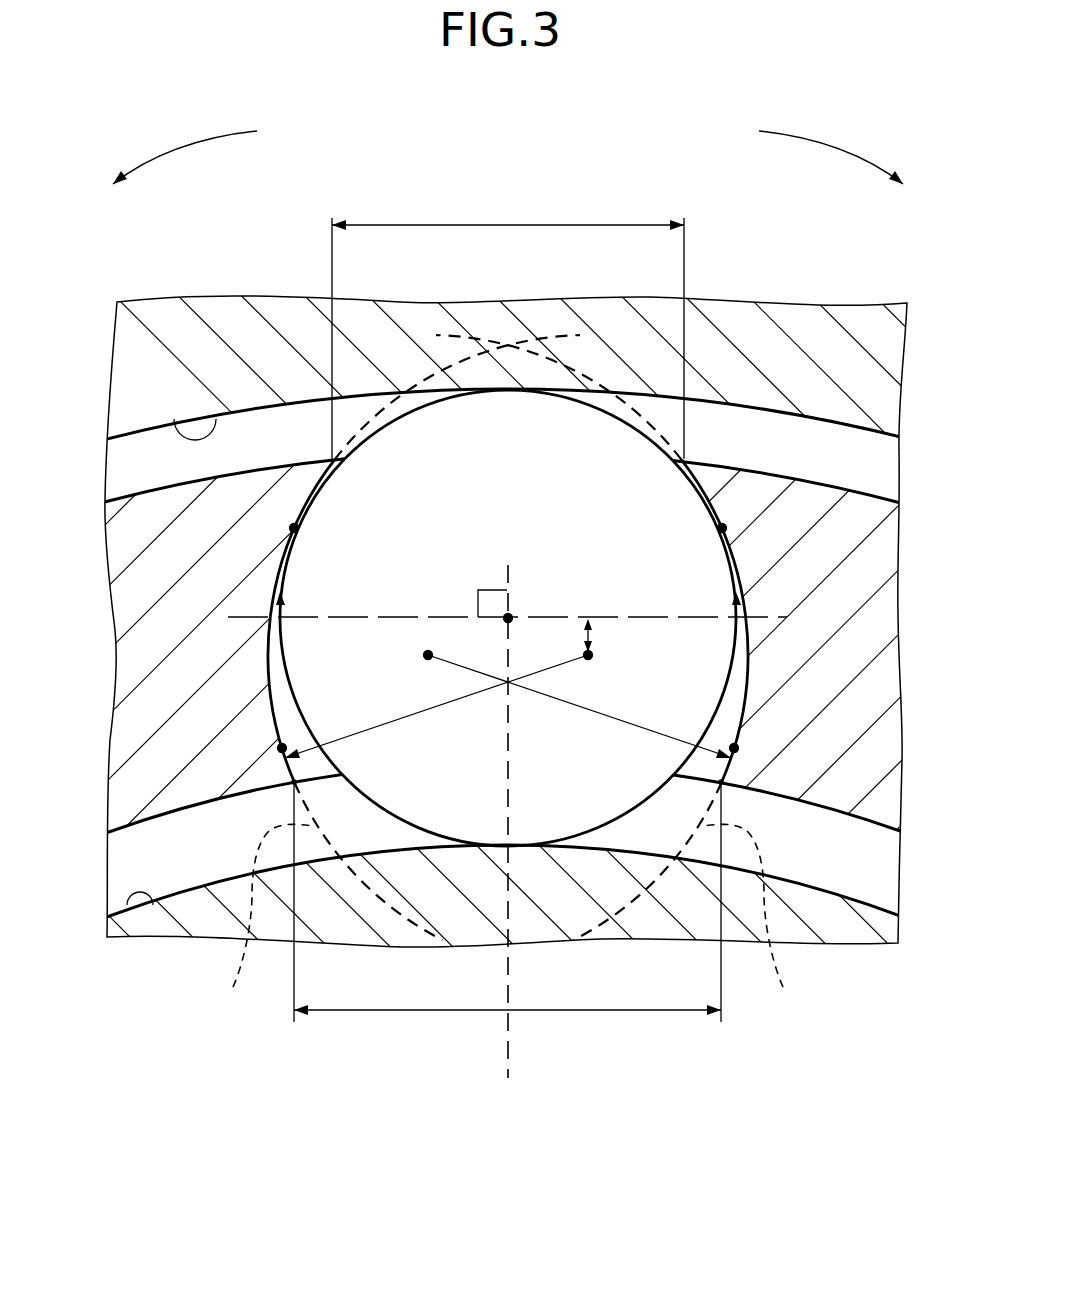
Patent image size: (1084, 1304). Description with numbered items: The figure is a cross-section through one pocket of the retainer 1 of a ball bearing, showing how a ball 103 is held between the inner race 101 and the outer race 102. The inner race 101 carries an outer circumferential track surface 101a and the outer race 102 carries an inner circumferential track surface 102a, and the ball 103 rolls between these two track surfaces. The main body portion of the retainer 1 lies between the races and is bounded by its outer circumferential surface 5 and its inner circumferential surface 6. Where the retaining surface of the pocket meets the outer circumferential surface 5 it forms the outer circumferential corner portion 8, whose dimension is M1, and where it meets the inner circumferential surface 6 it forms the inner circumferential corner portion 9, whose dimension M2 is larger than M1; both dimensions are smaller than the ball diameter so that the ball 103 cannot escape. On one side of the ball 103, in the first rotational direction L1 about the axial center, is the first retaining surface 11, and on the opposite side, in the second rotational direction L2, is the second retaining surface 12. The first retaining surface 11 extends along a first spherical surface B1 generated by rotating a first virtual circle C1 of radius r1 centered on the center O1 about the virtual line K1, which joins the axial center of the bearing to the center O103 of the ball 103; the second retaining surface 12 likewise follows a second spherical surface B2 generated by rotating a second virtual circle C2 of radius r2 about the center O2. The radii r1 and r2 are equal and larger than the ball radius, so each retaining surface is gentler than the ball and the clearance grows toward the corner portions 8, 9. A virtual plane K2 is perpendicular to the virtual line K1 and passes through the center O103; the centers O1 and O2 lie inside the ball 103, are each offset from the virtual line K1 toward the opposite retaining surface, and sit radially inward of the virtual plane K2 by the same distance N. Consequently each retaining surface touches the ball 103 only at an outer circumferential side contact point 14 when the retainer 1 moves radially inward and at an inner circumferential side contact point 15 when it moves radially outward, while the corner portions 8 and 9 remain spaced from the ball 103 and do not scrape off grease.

The retainer 1 is at (857, 711).
The outer circumferential surface 5 is at (806, 475).
The inner circumferential surface 6 is at (827, 810).
The outer circumferential corner portion 8 is at (334, 455).
The inner circumferential corner portion 9 is at (294, 783).
The first retaining surface 11 is at (282, 593).
The second retaining surface 12 is at (745, 595).
The outer circumferential side contact point 14 is at (302, 534).
The inner circumferential side contact point 15 is at (291, 750).
The inner race 101 is at (850, 922).
The outer circumferential track surface 101a is at (153, 902).
The outer race 102 is at (802, 335).
The inner circumferential track surface 102a is at (172, 413).
The ball 103 is at (310, 655).
The virtual line K1 is at (507, 1080).
The virtual plane K2 is at (787, 617).
The center of the ball O103 is at (508, 612).
The center of the first virtual circle O1 is at (593, 655).
The center of the second virtual circle O2 is at (423, 655).
The distance N is at (595, 636).
The radius of the first virtual circle r1 is at (410, 715).
The radius of the second virtual circle r2 is at (580, 707).
The dimension of the outer circumferential corner portion M1 is at (497, 226).
The dimension of the inner circumferential corner portion M2 is at (551, 1012).
The first rotational direction L1 is at (185, 155).
The second rotational direction L2 is at (831, 155).
The first spherical surface B1 is at (257, 920).
The first virtual circle C1 is at (266, 898).
The second spherical surface B2 is at (742, 920).
The second virtual circle C2 is at (763, 898).